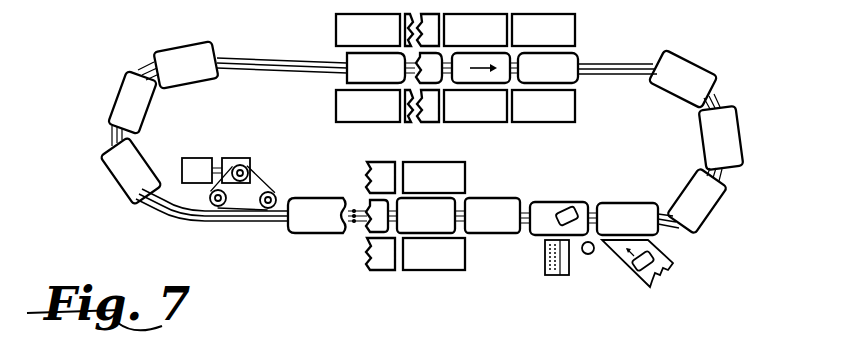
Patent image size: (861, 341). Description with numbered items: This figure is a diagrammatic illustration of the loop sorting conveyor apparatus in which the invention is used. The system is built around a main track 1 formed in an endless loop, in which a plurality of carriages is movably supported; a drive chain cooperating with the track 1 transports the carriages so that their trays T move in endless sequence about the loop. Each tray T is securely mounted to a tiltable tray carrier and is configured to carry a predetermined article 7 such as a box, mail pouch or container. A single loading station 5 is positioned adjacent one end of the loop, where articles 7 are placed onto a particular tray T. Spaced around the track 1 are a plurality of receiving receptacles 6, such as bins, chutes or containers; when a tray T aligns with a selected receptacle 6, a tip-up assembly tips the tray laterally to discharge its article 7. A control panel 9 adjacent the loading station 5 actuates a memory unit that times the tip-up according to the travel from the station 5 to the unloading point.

The tray T is at (137, 118).
The main track 1 is at (256, 229).
The loading station 5 is at (618, 258).
The receiving receptacles 6 is at (525, 118).
The article 7 is at (576, 213).
The control panel 9 is at (562, 276).